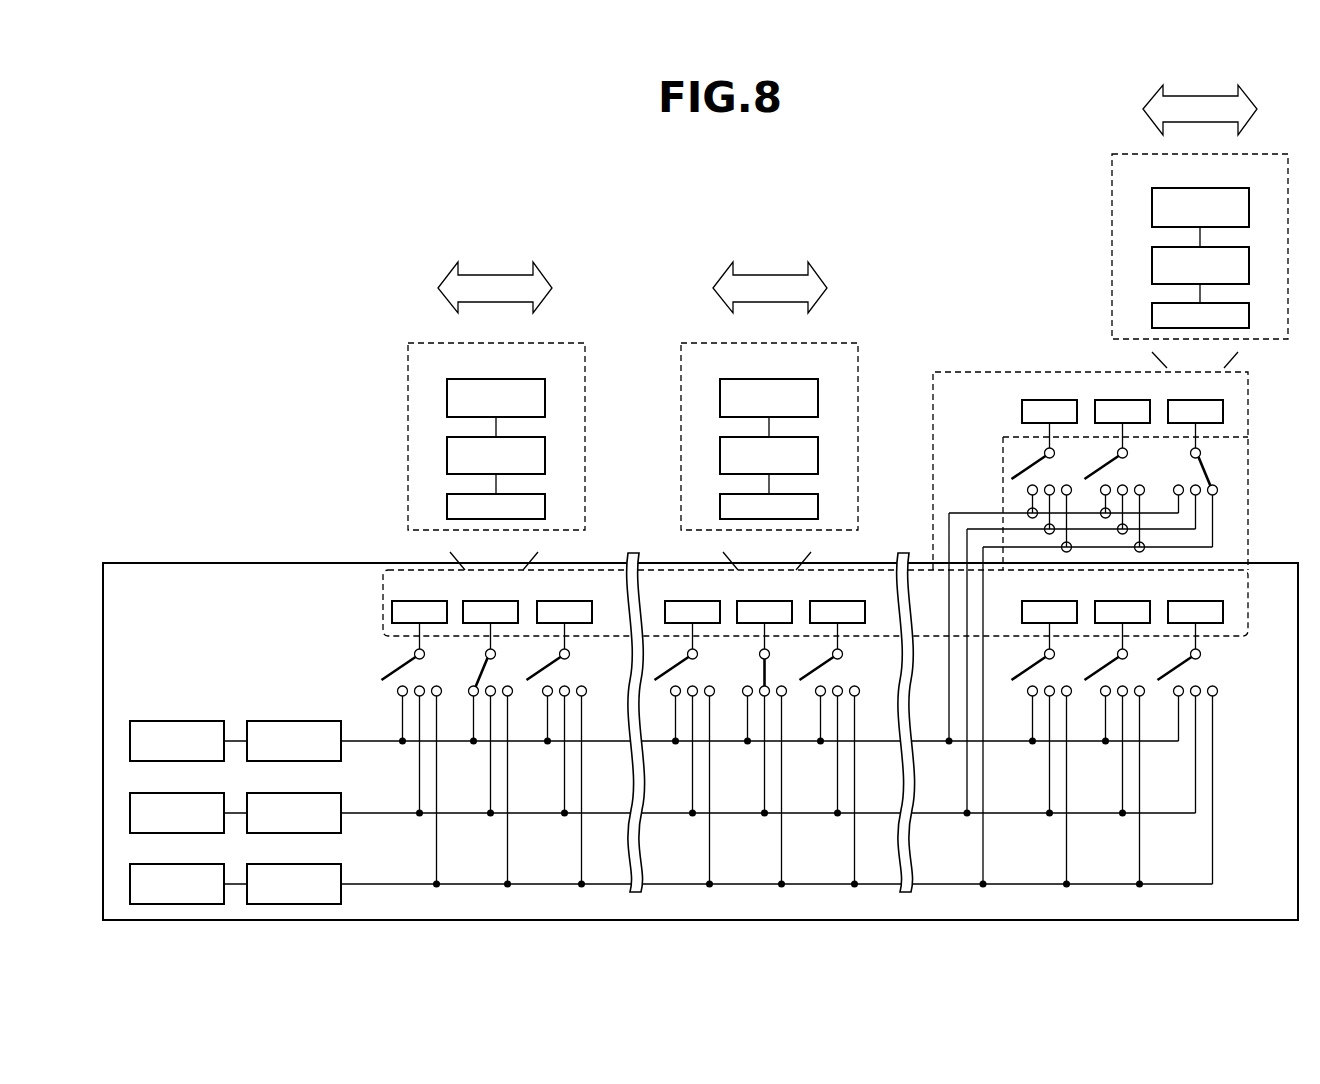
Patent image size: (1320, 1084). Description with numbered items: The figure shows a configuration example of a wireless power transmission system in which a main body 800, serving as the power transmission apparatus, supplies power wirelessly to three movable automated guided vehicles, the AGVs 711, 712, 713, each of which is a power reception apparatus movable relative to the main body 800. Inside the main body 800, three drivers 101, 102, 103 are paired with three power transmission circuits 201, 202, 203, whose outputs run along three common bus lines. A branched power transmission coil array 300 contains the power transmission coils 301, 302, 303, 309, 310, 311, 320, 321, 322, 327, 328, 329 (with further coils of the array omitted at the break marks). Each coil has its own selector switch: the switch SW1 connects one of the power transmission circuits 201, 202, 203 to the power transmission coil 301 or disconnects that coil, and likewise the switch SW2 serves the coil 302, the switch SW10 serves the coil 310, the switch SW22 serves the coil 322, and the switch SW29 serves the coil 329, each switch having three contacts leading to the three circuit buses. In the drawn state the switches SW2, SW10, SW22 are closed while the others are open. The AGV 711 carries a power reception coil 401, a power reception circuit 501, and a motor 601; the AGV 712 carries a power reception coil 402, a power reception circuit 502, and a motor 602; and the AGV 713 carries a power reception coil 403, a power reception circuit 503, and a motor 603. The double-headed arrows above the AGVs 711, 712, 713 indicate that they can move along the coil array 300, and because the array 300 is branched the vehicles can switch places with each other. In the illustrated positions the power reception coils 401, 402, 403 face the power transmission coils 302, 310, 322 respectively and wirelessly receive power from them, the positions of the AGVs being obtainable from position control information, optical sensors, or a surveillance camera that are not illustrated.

The main body 800 is at (222, 562).
The driver 101 is at (138, 722).
The driver 102 is at (138, 794).
The driver 103 is at (138, 865).
The power transmission circuit 201 is at (255, 722).
The power transmission circuit 202 is at (255, 794).
The power transmission circuit 203 is at (255, 865).
The power transmission coil array 300 is at (370, 587).
The power transmission coil 301 is at (402, 601).
The power transmission coil 302 is at (473, 601).
The power transmission coil 303 is at (547, 601).
The power transmission coil 309 is at (675, 601).
The power transmission coil 310 is at (747, 601).
The power transmission coil 311 is at (820, 601).
The power transmission coil 320 is at (1032, 400).
The power transmission coil 321 is at (1105, 400).
The power transmission coil 322 is at (1178, 400).
The power transmission coil 327 is at (1032, 601).
The power transmission coil 328 is at (1105, 601).
The power transmission coil 329 is at (1178, 601).
The power reception coil 401 is at (545, 506).
The power reception coil 402 is at (818, 506).
The power reception coil 403 is at (1152, 319).
The power reception circuit 501 is at (545, 452).
The power reception circuit 502 is at (818, 452).
The power reception circuit 503 is at (1152, 269).
The motor 601 is at (545, 394).
The motor 602 is at (818, 394).
The motor 603 is at (1152, 211).
The AGV 711 is at (483, 344).
The AGV 712 is at (756, 344).
The AGV 713 is at (1225, 155).
The switch SW1 is at (398, 668).
The switch SW2 is at (478, 675).
The switch SW10 is at (762, 675).
The switch SW22 is at (1216, 463).
The switch SW29 is at (1198, 670).